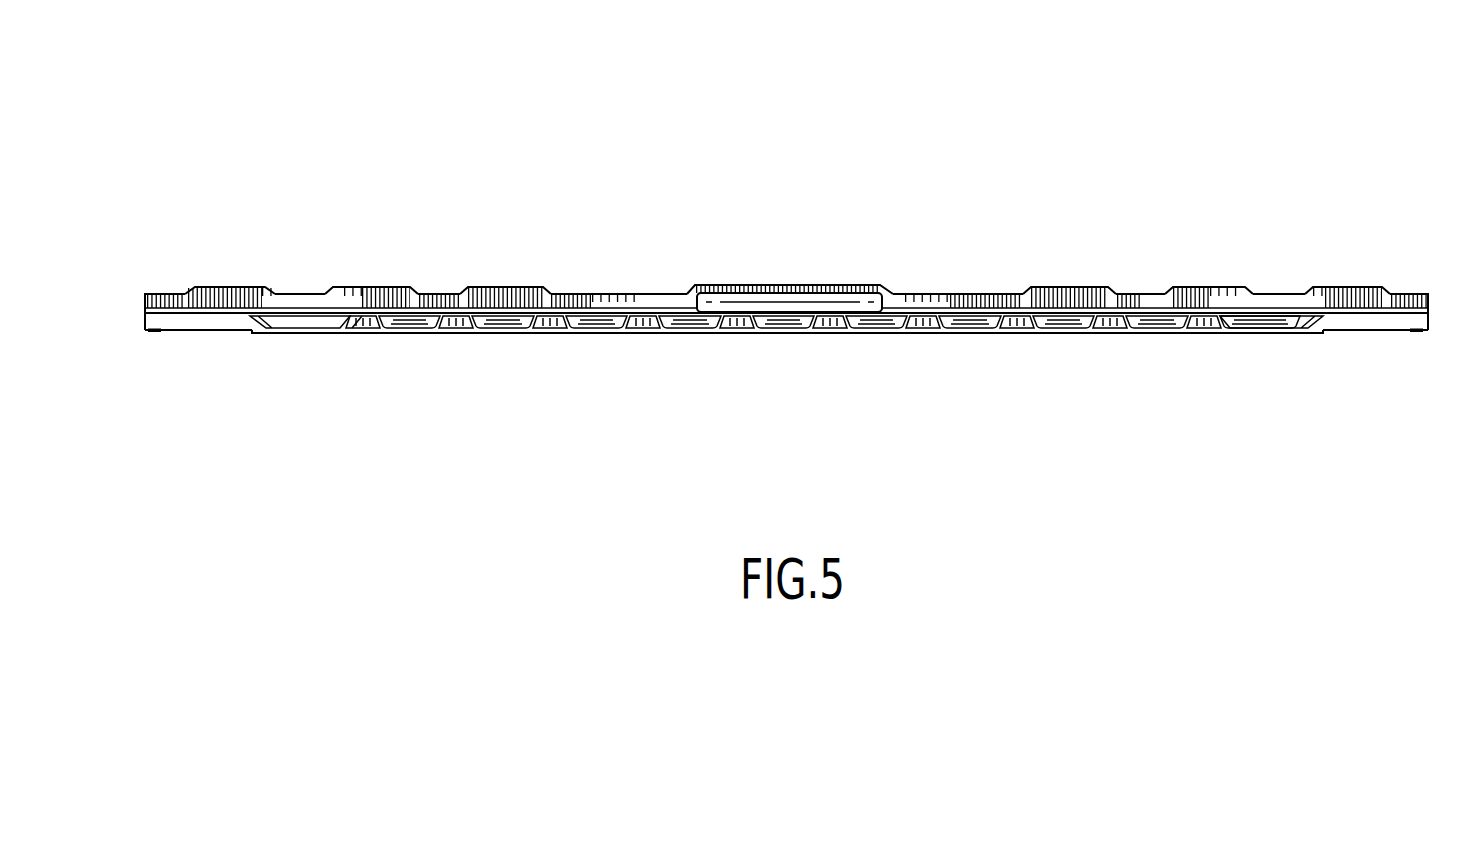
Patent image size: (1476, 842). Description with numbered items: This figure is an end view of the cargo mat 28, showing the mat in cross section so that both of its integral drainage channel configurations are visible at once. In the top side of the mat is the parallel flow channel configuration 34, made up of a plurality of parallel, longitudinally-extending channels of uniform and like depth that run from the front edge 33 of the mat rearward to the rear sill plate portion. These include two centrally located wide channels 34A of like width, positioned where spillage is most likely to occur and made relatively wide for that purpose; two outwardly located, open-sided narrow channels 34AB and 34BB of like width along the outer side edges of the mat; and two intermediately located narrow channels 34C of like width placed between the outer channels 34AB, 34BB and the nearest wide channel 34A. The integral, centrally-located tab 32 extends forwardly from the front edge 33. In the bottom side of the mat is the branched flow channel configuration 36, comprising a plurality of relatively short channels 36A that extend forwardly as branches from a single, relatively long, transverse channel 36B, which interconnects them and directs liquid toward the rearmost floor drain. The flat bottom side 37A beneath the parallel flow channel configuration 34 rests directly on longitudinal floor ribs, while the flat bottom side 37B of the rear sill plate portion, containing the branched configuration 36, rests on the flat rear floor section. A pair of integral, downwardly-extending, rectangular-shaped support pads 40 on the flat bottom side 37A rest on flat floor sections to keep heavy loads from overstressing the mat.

The cargo mat 28 is at (1328, 172).
The tab 32 is at (787, 291).
The front edge 33 is at (1073, 298).
The parallel flow channel configuration 34 is at (573, 294).
The wide channels 34A is at (625, 293).
The open-sided narrow channel 34AB is at (1415, 293).
The open-sided narrow channel 34BB is at (170, 293).
The narrow channels 34C is at (295, 293).
The branched flow channel configuration 36 is at (1013, 337).
The short channels 36A is at (380, 331).
The transverse channel 36B is at (735, 331).
The flat bottom side 37A is at (202, 331).
The flat bottom side 37B is at (327, 335).
The support pads 40 is at (293, 334).